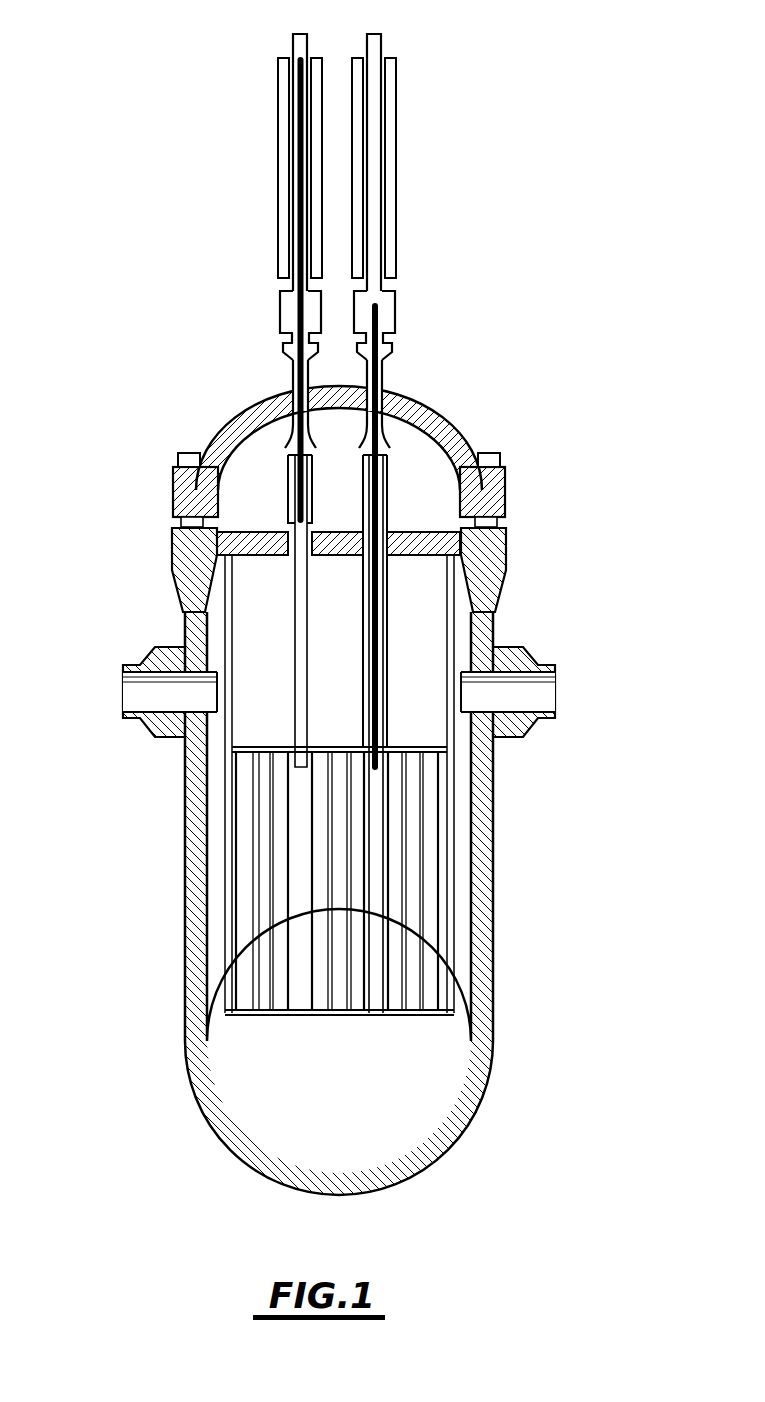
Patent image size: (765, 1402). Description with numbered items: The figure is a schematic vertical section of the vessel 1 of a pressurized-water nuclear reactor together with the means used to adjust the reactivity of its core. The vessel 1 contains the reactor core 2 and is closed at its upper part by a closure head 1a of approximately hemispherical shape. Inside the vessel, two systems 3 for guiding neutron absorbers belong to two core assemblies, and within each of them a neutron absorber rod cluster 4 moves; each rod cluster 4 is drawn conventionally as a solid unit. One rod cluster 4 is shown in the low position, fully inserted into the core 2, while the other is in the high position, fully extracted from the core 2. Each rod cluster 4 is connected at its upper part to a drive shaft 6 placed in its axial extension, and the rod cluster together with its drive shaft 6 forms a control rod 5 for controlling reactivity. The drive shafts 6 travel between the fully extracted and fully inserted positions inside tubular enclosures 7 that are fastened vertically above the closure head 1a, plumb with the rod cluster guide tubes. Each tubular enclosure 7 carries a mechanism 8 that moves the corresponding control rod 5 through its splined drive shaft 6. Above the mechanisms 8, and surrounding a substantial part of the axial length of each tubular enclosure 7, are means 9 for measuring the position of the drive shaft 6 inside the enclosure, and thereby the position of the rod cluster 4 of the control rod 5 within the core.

The vessel 1 is at (190, 1124).
The closure head 1a is at (435, 430).
The reactor core 2 is at (422, 938).
The system for guiding neutron absorbers 3 is at (303, 1000).
The neutron absorber rod cluster 4 is at (300, 636).
The control rod 5 is at (267, 467).
The drive shaft 6 is at (300, 385).
The tubular enclosure 7 is at (297, 47).
The mechanism 8 is at (278, 313).
The means for measuring the position of the drive shaft 9 is at (282, 103).